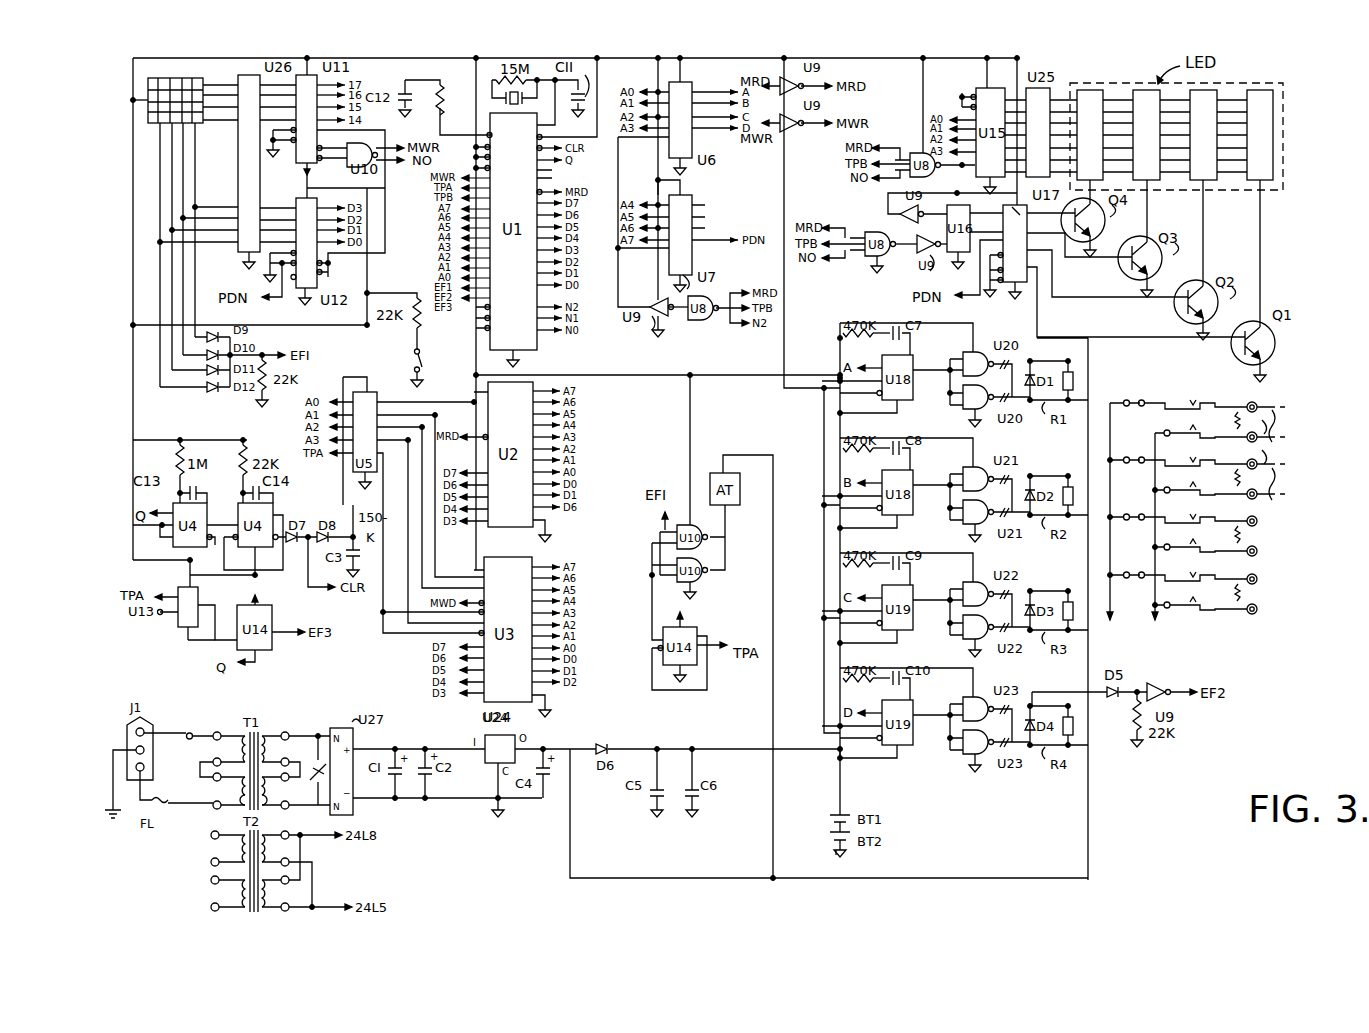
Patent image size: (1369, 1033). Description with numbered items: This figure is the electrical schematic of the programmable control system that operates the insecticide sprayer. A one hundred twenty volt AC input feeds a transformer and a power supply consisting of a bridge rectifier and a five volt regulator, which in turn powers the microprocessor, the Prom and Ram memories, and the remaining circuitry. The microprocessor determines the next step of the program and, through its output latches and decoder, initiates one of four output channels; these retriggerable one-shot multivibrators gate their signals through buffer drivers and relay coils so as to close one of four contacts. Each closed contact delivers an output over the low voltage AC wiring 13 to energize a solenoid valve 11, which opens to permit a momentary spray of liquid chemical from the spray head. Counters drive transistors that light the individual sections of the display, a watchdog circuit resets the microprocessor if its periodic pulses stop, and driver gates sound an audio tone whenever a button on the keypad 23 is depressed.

The keypad 23 is at (177, 80).
The solenoid valve 11 is at (1272, 404).
The AC wiring 13 is at (1268, 446).